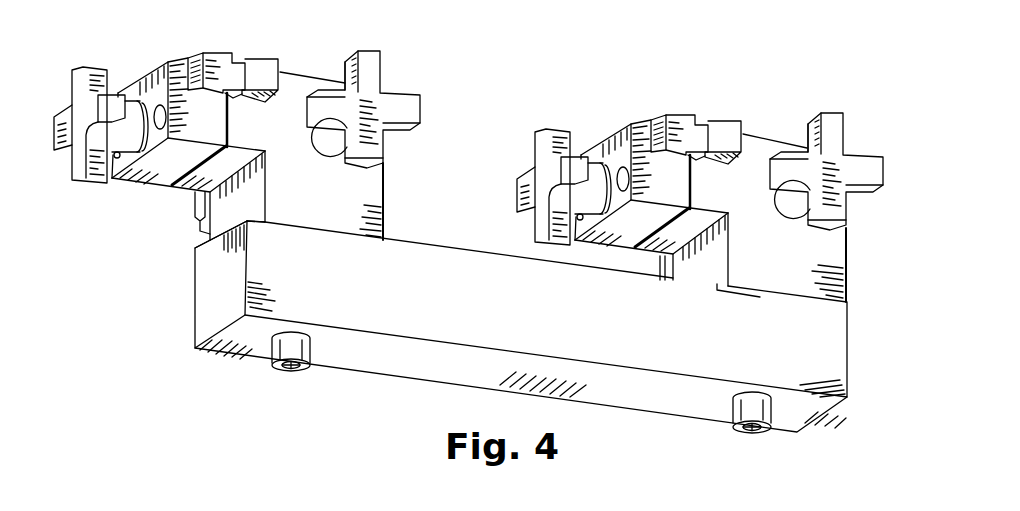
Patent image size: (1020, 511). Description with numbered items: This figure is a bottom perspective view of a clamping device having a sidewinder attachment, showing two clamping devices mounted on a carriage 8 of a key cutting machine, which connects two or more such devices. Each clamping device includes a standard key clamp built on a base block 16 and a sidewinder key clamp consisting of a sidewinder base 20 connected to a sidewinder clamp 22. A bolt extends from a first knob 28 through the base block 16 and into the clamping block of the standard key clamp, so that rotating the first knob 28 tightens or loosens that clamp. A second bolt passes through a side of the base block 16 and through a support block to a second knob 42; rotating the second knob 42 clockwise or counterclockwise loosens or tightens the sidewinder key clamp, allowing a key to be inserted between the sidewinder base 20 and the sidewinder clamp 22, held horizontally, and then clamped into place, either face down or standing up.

The carriage 8 is at (822, 345).
The base block 16 is at (808, 268).
The sidewinder base 20 is at (268, 77).
The sidewinder clamp 22 is at (210, 72).
The first knob 28 is at (368, 80).
The second knob 42 is at (94, 158).